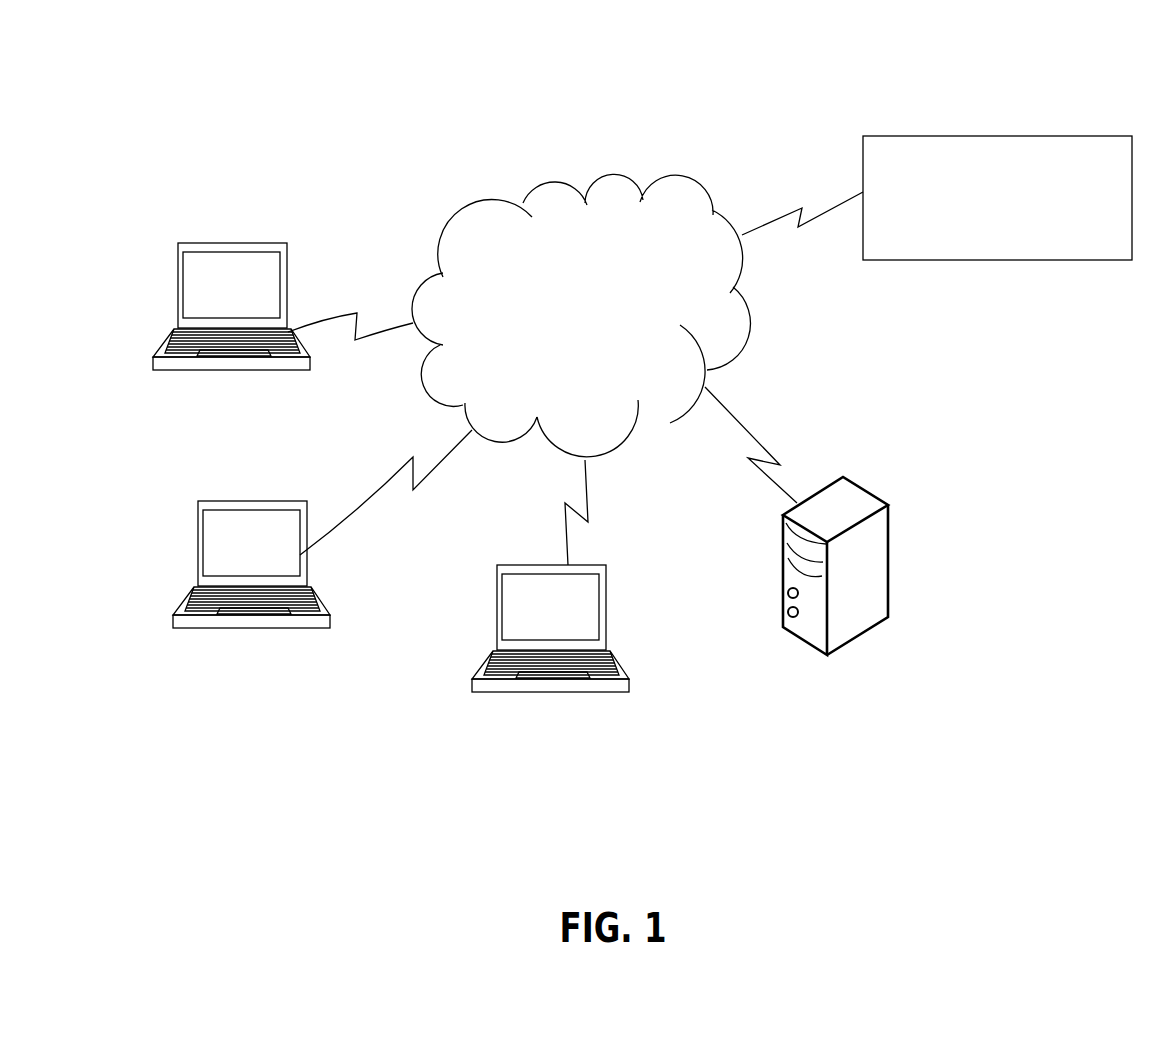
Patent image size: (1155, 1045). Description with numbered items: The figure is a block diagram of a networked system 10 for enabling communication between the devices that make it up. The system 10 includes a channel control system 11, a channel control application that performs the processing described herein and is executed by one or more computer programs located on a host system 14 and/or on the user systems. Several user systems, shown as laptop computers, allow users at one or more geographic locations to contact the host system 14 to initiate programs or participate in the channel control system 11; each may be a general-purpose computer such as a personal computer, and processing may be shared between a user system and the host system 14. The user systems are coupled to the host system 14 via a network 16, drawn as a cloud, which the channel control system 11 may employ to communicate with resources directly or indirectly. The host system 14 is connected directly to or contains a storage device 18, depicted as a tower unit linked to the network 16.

The networked system 10 is at (408, 113).
The channel control system 11 is at (984, 211).
The host system 14 is at (863, 170).
The network 16 is at (556, 326).
The storage device 18 is at (890, 562).